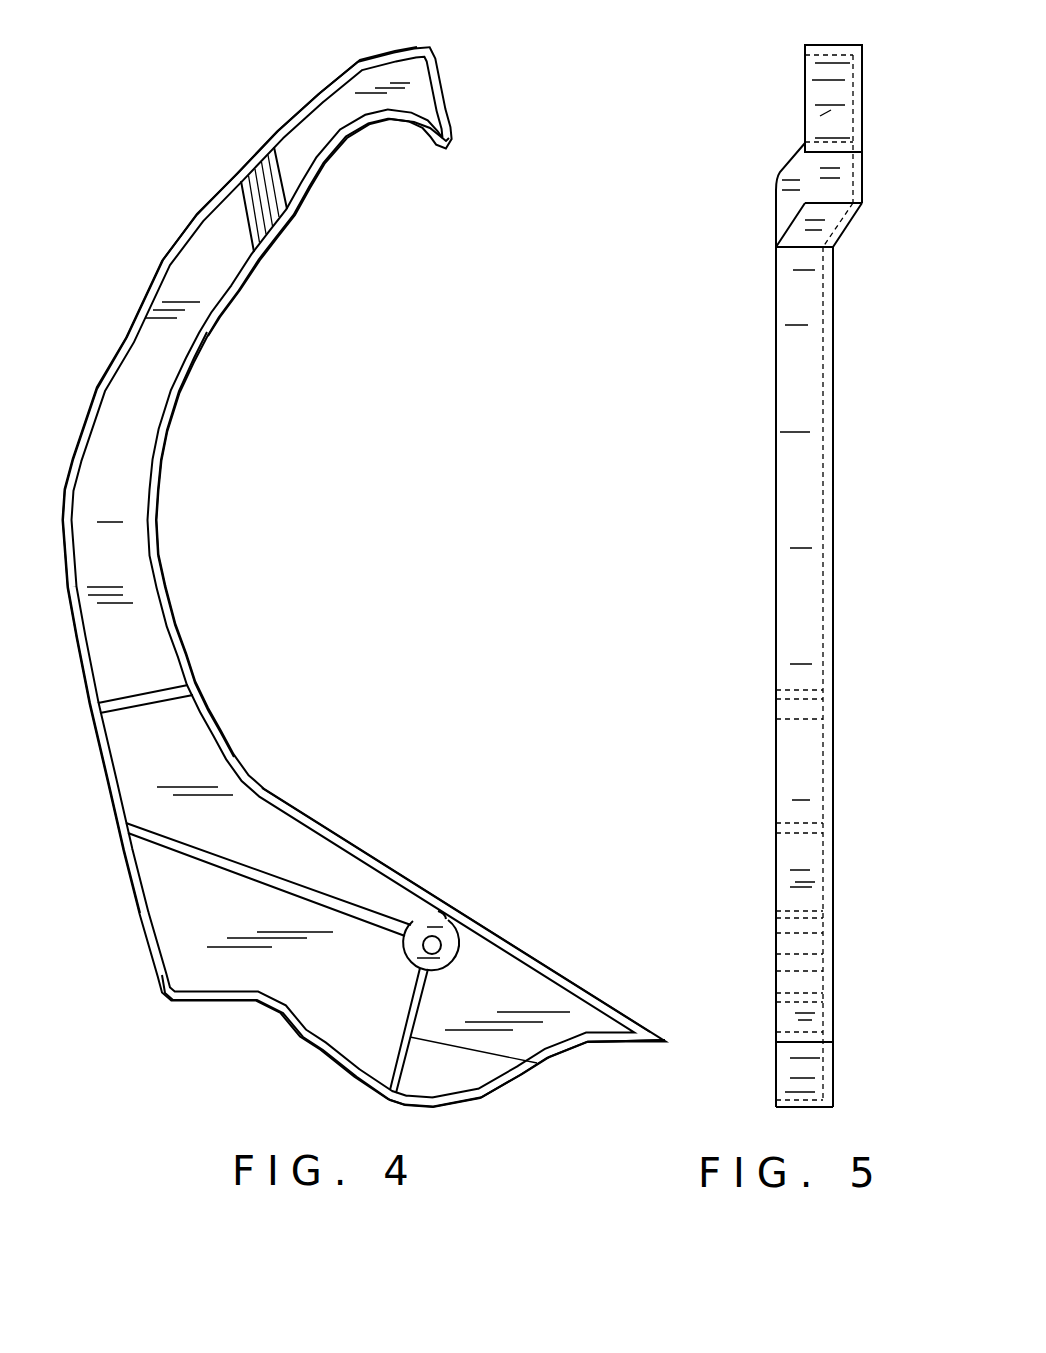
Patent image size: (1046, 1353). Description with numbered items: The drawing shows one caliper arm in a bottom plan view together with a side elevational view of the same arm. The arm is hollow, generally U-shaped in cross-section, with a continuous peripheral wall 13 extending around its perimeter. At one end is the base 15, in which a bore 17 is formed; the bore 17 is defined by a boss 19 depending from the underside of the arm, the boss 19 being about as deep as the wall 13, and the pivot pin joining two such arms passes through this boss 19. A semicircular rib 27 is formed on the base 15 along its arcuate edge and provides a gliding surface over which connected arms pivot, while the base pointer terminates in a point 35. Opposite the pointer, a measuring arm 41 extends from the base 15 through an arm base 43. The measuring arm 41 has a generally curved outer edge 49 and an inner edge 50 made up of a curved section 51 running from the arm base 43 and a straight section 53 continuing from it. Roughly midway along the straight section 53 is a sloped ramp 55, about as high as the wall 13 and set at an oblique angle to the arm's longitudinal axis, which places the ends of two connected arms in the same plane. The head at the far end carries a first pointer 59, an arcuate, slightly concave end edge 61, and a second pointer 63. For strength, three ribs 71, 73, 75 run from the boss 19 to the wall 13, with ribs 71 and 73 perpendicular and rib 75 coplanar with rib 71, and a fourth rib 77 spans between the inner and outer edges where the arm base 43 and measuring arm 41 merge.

In FIG. 4, the peripheral wall 13 is at (293, 805).
In FIG. 4, the base 15 is at (344, 1040).
In FIG. 4, the bore 17 is at (437, 946).
In FIG. 4, the boss 19 is at (447, 937).
In FIG. 4, the semicircular rib 27 is at (357, 1085).
In FIG. 5, the semicircular rib 27 is at (792, 1107).
In FIG. 4, the point 35 is at (665, 1040).
In FIG. 5, the point 35 is at (776, 1042).
In FIG. 4, the measuring arm 41 is at (97, 524).
In FIG. 4, the arm base 43 is at (192, 909).
In FIG. 4, the outer edge 49 is at (97, 375).
In FIG. 5, the outer edge 49 is at (790, 203).
In FIG. 4, the inner edge 50 is at (158, 470).
In FIG. 5, the inner edge 50 is at (795, 510).
In FIG. 4, the curved section 51 is at (188, 665).
In FIG. 4, the straight section 53 is at (310, 183).
In FIG. 4, the ramp 55 is at (270, 212).
In FIG. 5, the ramp 55 is at (828, 223).
In FIG. 5, the first pointer 59 is at (832, 44).
In FIG. 5, the end edge 61 is at (823, 113).
In FIG. 5, the second pointer 63 is at (862, 152).
In FIG. 4, the rib 71 is at (537, 1063).
In FIG. 4, the rib 73 is at (303, 887).
In FIG. 4, the rib 75 is at (437, 914).
In FIG. 4, the fourth rib 77 is at (125, 695).